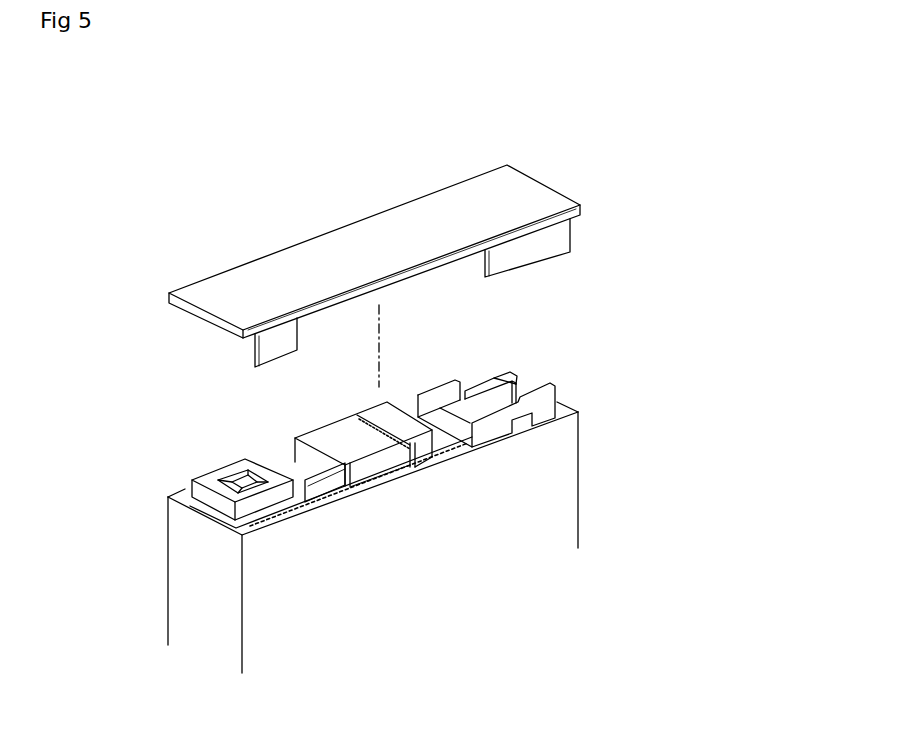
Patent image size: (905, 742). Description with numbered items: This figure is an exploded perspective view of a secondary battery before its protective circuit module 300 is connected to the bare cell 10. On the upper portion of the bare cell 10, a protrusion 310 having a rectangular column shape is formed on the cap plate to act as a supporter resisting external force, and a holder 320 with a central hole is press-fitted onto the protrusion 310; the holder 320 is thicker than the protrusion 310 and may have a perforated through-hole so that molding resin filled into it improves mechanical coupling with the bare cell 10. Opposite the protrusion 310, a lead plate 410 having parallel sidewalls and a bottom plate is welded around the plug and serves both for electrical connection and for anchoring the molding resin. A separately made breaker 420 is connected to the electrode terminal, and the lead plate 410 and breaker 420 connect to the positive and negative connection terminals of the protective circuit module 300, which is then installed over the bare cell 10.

The bare cell 10 is at (192, 571).
The protective circuit module 300 is at (345, 247).
The protrusion 310 is at (232, 470).
The holder 320 is at (240, 463).
The lead plate 410 is at (497, 397).
The breaker 420 is at (333, 436).